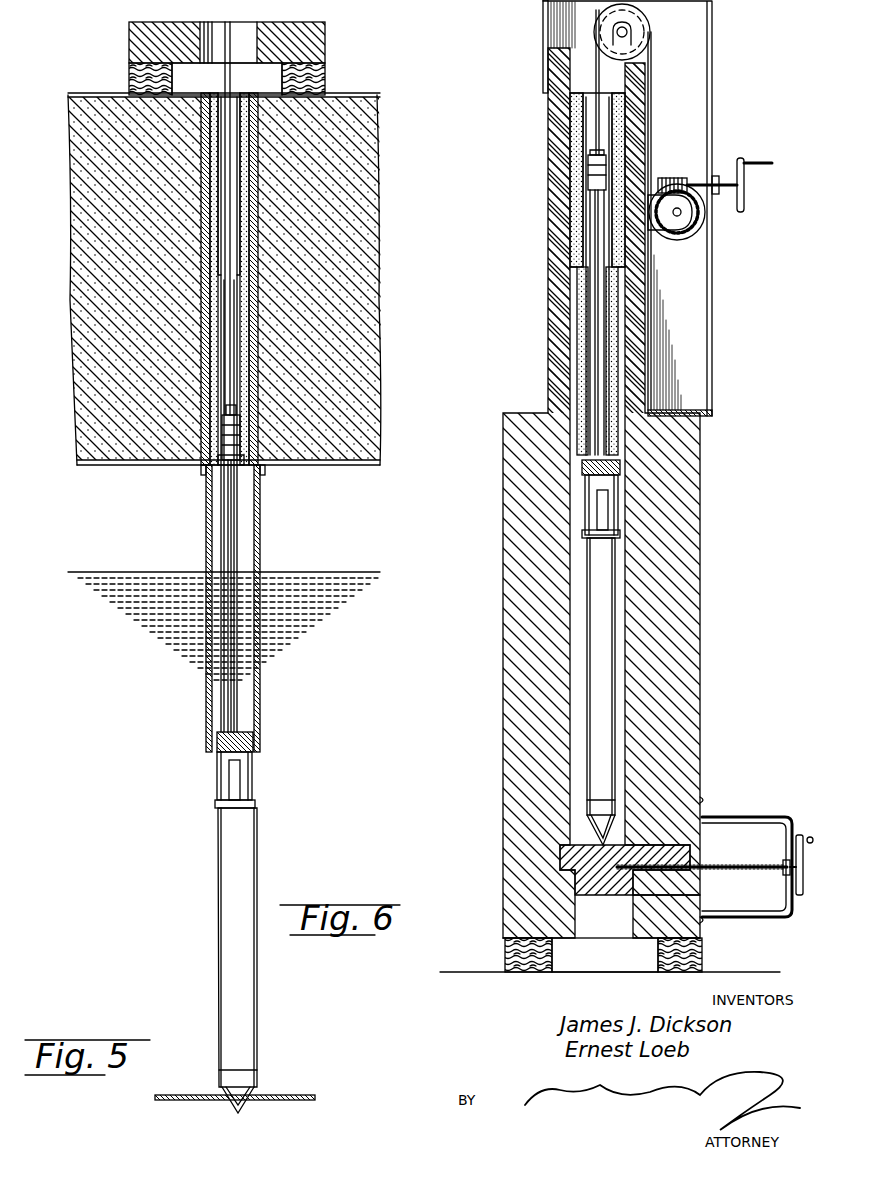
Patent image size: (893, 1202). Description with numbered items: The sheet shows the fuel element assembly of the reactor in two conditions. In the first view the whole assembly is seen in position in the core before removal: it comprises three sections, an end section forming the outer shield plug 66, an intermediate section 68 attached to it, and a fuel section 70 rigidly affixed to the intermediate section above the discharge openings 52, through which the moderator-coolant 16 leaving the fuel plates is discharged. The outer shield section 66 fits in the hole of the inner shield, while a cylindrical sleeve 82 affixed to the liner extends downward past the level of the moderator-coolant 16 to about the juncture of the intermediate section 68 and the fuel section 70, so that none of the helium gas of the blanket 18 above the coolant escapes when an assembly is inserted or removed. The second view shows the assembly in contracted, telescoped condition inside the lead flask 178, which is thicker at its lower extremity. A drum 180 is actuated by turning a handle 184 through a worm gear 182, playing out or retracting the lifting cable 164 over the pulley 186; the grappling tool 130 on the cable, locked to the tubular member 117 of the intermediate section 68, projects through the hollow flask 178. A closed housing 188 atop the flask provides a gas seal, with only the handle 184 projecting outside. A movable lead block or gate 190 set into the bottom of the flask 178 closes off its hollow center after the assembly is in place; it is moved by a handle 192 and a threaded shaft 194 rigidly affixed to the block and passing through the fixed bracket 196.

In FIG. 5, the moderator-coolant 16 is at (350, 572).
In FIG. 5, the helium blanket 18 is at (355, 492).
In FIG. 5, the discharge openings 52 is at (240, 777).
In FIG. 5, the outer shield plug 66 is at (262, 256).
In FIG. 6, the outer shield plug 66 is at (622, 327).
In FIG. 5, the intermediate section 68 is at (245, 538).
In FIG. 6, the intermediate section 68 is at (598, 362).
In FIG. 5, the fuel section 70 is at (215, 893).
In FIG. 6, the fuel section 70 is at (622, 625).
In FIG. 5, the cylindrical sleeve 82 is at (207, 502).
In FIG. 5, the tubular member 117 is at (233, 714).
In FIG. 6, the tubular member 117 is at (595, 309).
In FIG. 5, the grappling tool 130 is at (233, 427).
In FIG. 6, the grappling tool 130 is at (606, 160).
In FIG. 5, the lifting cable 164 is at (232, 78).
In FIG. 6, the lifting cable 164 is at (652, 82).
In FIG. 5, the flask 178 is at (327, 50).
In FIG. 6, the flask 178 is at (702, 690).
In FIG. 6, the drum 180 is at (672, 250).
In FIG. 6, the worm gear 182 is at (690, 168).
In FIG. 6, the handle 184 is at (745, 158).
In FIG. 6, the pulley 186 is at (640, 28).
In FIG. 6, the housing 188 is at (712, 62).
In FIG. 6, the lead block or gate 190 is at (690, 852).
In FIG. 6, the handle 192 is at (801, 832).
In FIG. 6, the threaded shaft 194 is at (745, 873).
In FIG. 6, the fixed bracket 196 is at (720, 817).